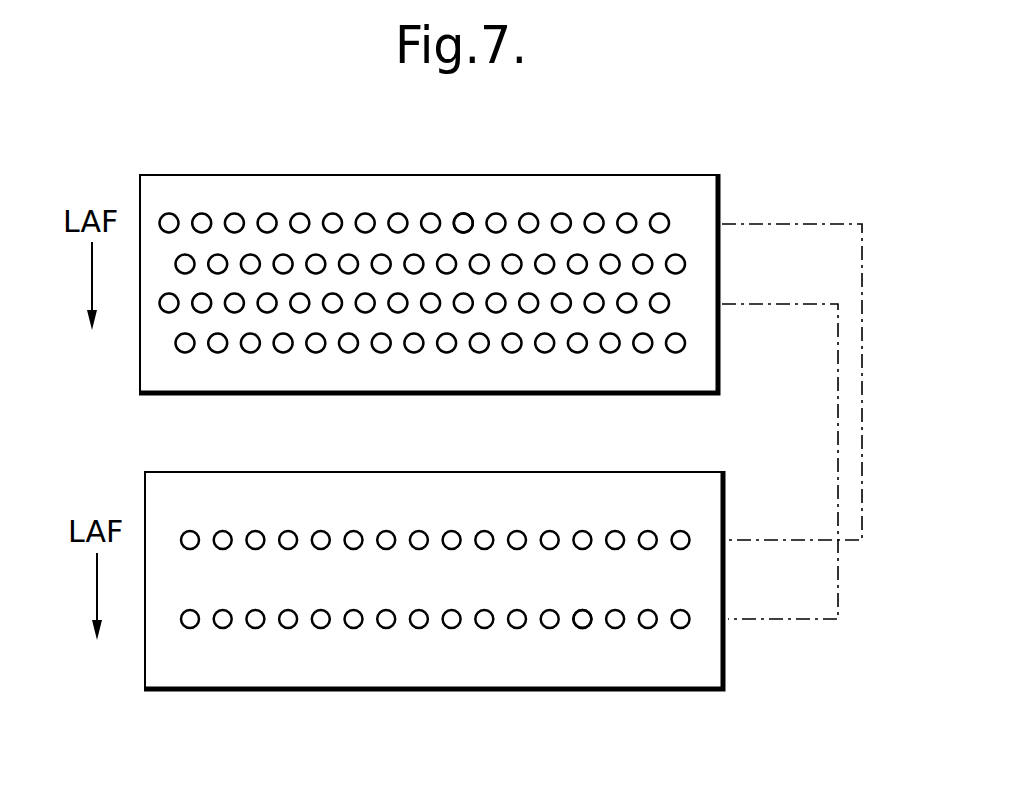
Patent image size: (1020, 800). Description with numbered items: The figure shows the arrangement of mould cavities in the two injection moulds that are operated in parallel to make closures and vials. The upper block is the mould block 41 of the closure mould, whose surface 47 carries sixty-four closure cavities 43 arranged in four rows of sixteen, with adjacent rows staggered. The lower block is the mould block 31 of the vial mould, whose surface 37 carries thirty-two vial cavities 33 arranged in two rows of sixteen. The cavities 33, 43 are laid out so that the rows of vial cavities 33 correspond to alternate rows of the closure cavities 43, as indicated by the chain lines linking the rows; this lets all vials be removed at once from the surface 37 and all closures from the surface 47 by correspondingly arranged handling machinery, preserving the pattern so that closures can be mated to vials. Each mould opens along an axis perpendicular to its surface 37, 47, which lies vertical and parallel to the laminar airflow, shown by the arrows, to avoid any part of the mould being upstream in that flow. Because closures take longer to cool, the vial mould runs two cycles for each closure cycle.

The mould block 41 is at (676, 174).
The surface 47 is at (236, 193).
The cavity 43 is at (458, 225).
The mould block 31 is at (682, 690).
The surface 37 is at (270, 670).
The cavity 33 is at (584, 620).